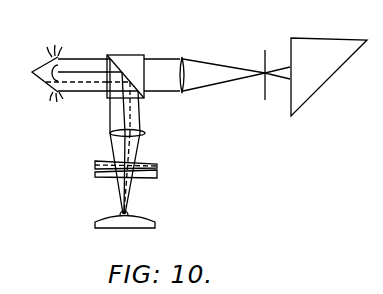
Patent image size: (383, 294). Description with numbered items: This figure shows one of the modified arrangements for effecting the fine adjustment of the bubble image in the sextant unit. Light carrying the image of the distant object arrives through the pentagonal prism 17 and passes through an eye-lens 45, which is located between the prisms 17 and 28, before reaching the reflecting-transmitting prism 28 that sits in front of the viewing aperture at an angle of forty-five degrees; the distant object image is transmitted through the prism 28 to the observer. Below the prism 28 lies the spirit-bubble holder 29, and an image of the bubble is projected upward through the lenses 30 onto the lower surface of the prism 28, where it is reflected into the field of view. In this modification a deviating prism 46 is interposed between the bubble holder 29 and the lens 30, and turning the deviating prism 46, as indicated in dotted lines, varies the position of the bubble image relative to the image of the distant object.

The pentagonal prism 17 is at (325, 77).
The reflecting-transmitting member or prism 28 is at (140, 54).
The spirit-bubble holder 29 is at (155, 226).
The lenses 30 is at (145, 133).
The eye-lens 45 is at (183, 57).
The deviating prism 46 is at (157, 165).